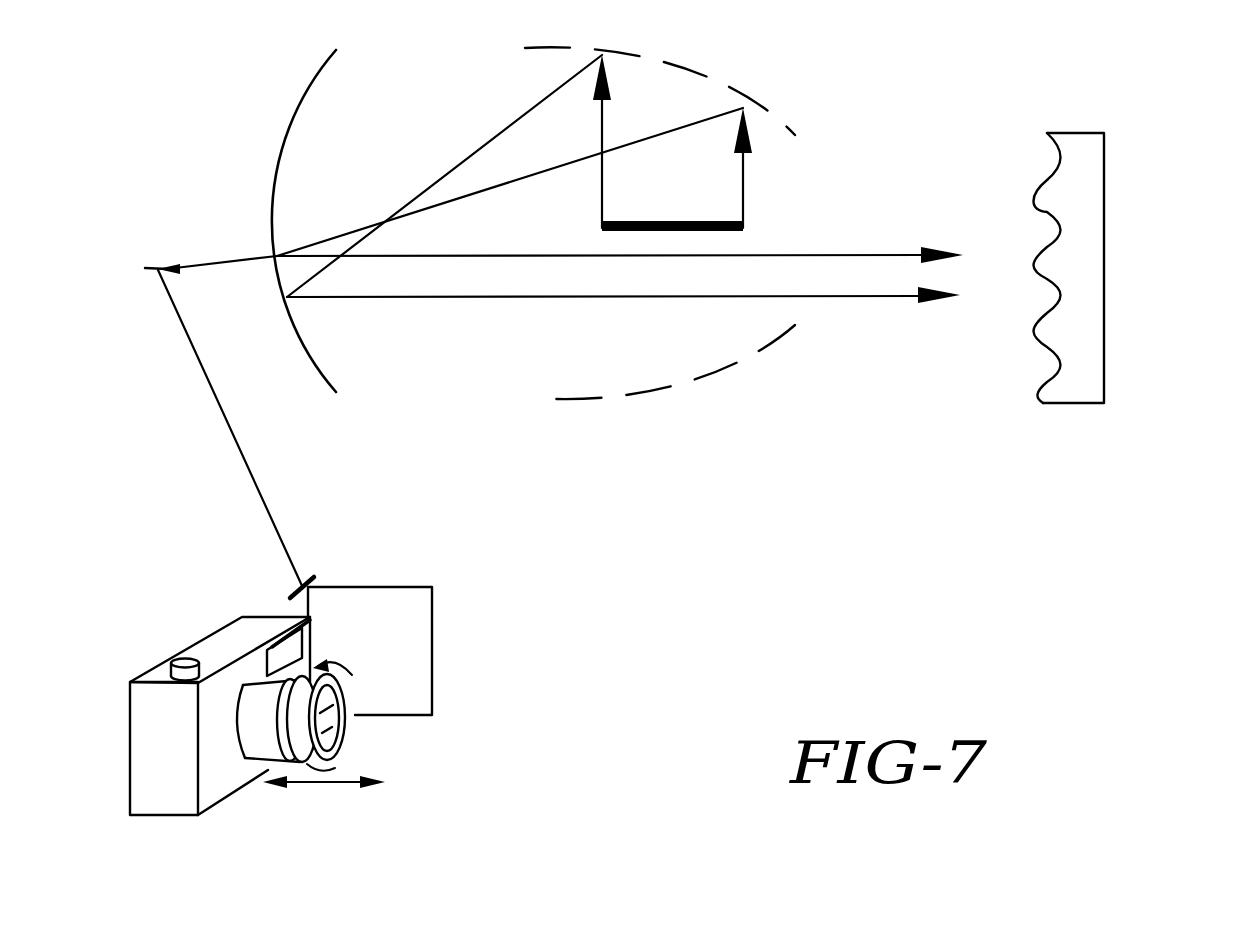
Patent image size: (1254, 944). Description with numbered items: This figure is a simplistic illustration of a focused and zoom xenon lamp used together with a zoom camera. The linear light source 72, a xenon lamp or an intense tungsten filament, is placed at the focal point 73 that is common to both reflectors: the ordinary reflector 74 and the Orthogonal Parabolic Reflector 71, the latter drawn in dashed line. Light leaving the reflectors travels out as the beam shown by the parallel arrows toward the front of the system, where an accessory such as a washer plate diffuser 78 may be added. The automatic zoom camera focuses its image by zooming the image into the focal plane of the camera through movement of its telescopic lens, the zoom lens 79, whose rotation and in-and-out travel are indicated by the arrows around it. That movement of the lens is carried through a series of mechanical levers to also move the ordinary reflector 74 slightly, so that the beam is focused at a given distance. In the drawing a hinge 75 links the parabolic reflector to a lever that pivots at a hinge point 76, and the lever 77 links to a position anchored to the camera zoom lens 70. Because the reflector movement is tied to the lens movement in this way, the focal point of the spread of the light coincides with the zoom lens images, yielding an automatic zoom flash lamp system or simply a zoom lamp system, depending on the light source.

The camera zoom lens 70 is at (433, 625).
The Orthogonal Parabolic Reflector 71 is at (707, 375).
The linear light source 72 is at (630, 218).
The focal point 73 is at (389, 218).
The ordinary reflector 74 is at (305, 83).
The hinge 75 is at (158, 268).
The hinge point 76 is at (187, 338).
The lever 77 is at (313, 577).
The washer plate diffuser 78 is at (1108, 235).
The zoom lens 79 is at (348, 733).